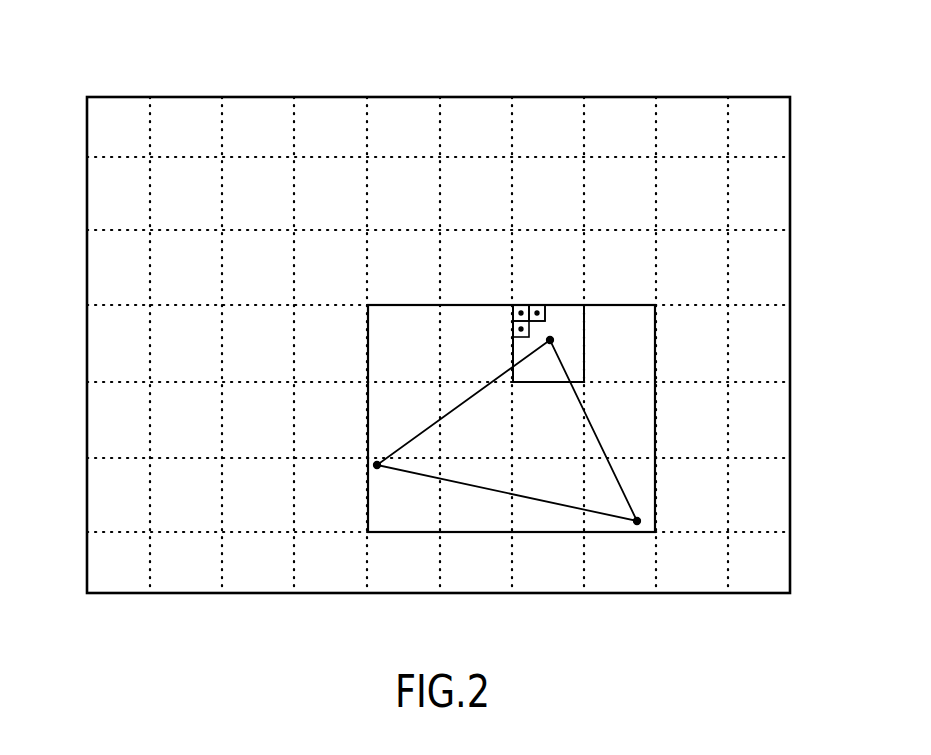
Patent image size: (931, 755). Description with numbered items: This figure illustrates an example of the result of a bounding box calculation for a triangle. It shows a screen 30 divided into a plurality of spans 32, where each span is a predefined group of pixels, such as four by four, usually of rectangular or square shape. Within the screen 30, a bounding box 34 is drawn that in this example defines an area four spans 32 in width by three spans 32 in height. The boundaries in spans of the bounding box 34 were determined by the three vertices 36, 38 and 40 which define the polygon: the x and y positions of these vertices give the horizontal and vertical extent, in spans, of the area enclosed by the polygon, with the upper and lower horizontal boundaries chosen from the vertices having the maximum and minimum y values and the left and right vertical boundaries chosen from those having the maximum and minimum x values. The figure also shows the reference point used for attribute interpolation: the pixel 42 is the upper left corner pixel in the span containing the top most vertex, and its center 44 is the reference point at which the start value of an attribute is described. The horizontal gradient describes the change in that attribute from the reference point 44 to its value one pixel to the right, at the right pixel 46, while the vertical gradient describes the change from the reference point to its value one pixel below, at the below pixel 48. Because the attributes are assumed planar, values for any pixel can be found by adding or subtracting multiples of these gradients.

The screen 30 is at (223, 97).
The span 32 is at (780, 200).
The bounding box 34 is at (380, 344).
The vertex 36 is at (553, 341).
The vertex 38 is at (643, 521).
The vertex 40 is at (375, 463).
The pixel 42 is at (514, 314).
The center 44 is at (530, 313).
The right pixel 46 is at (547, 313).
The below pixel 48 is at (513, 331).